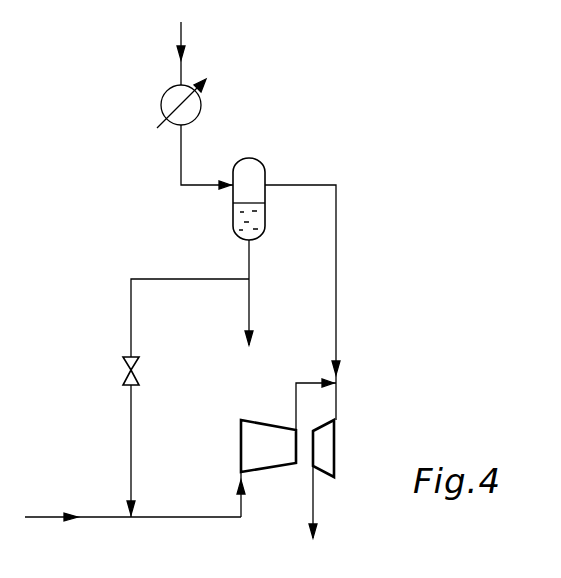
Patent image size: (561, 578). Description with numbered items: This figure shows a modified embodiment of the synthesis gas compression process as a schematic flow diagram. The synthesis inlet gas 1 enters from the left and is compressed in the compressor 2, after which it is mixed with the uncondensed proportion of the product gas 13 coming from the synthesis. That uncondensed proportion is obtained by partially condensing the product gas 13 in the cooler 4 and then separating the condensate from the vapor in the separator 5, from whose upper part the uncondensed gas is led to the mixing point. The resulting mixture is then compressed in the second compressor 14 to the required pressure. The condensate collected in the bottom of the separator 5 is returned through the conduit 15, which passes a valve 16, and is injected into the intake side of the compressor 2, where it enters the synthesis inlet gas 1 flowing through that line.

The synthesis inlet gas 1 is at (48, 516).
The compressor 2 is at (240, 450).
The cooler 4 is at (166, 97).
The separator 5 is at (233, 221).
The product gas 13 is at (181, 32).
The second compressor 14 is at (332, 437).
The conduit 15 is at (159, 279).
The valve 16 is at (123, 376).